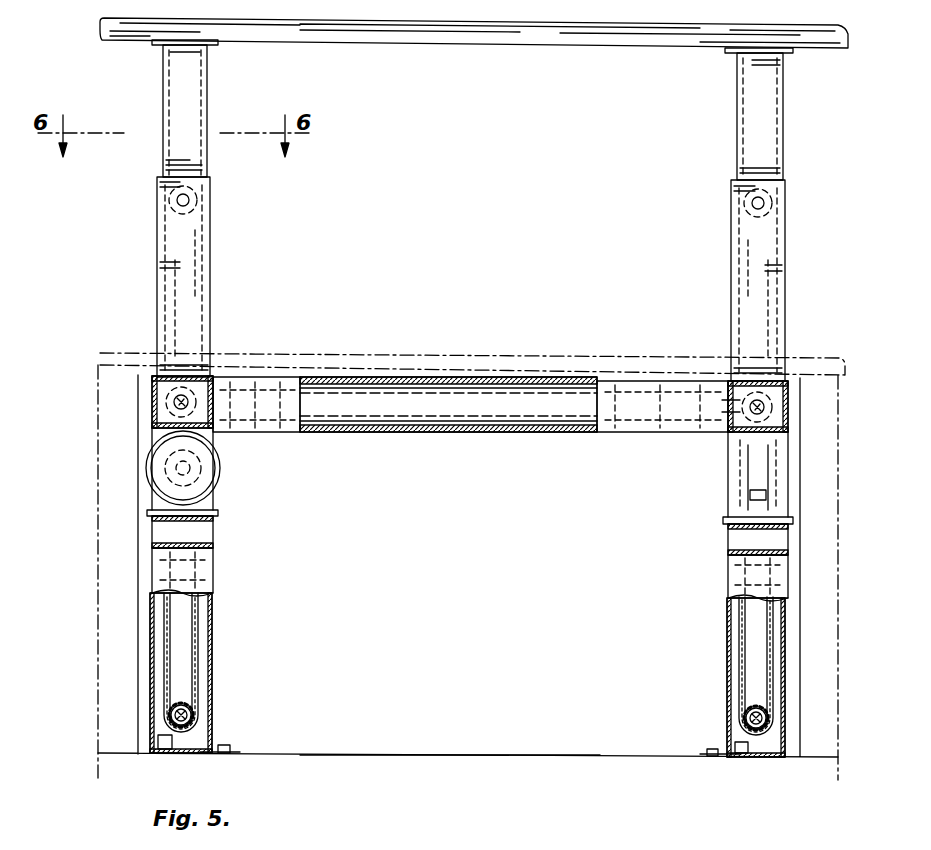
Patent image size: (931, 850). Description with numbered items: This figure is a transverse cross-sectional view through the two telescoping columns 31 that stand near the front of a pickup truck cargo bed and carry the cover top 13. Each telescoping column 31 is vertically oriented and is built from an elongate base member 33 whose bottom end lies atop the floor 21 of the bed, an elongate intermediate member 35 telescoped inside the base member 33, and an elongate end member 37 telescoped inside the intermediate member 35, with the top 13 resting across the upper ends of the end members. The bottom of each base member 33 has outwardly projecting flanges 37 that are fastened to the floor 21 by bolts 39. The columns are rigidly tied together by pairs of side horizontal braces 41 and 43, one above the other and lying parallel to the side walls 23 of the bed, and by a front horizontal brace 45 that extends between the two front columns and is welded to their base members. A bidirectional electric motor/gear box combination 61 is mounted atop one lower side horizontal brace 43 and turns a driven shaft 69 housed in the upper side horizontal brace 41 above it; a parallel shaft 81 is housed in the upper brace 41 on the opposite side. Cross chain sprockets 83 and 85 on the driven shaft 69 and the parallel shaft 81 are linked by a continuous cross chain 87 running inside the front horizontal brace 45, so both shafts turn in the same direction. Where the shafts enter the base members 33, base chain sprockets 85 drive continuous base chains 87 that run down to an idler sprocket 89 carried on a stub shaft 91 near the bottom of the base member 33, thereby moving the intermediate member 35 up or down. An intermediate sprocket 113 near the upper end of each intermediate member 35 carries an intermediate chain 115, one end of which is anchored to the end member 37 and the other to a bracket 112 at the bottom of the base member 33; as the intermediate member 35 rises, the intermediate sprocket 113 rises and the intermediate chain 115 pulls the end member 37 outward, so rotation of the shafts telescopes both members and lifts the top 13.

The top 13 is at (103, 27).
The bottom 21 is at (428, 755).
The side walls 23 is at (98, 488).
The telescoping column 31 is at (216, 578).
The base member 33 is at (212, 666).
The intermediate member 35 is at (210, 242).
The end member 37 is at (197, 85).
The bolts 39 is at (228, 745).
The upper side horizontal brace 41 is at (152, 394).
The lower side horizontal brace 43 is at (150, 530).
The front horizontal brace 45 is at (632, 405).
The motor/gear box combination 61 is at (206, 476).
The driven shaft 69 is at (181, 400).
The parallel shaft 81 is at (760, 407).
The cross chain sprocket 83 is at (240, 388).
The cross chain sprocket 85 is at (728, 425).
The cross chain 87 is at (462, 385).
The idler sprocket 89 is at (183, 705).
The stub shaft 91 is at (175, 715).
The bracket 112 is at (172, 753).
The intermediate sprocket 113 is at (181, 220).
The intermediate chain 115 is at (172, 268).